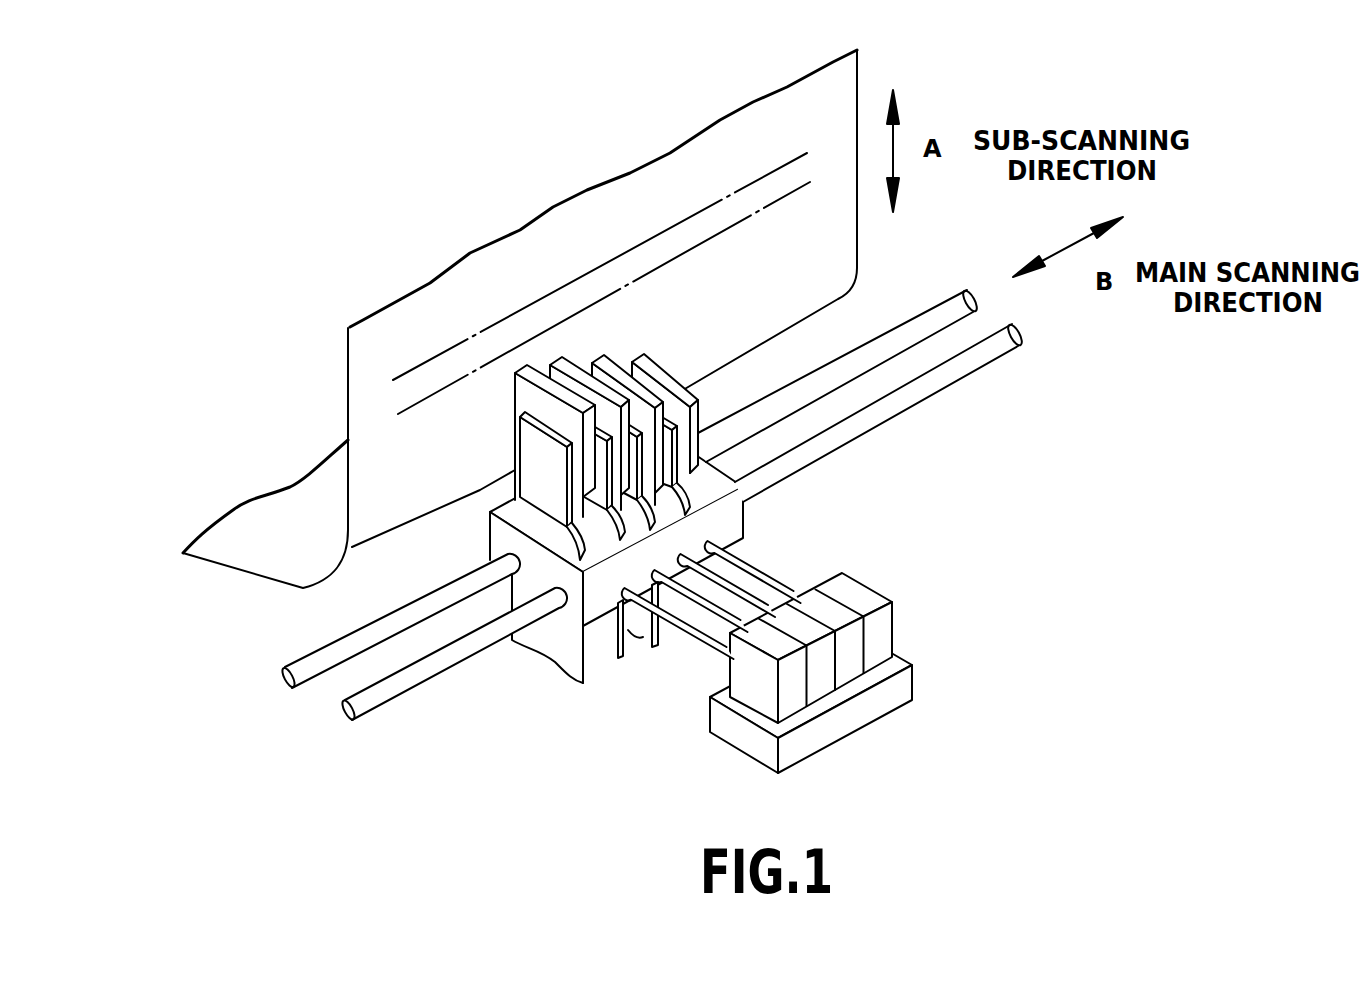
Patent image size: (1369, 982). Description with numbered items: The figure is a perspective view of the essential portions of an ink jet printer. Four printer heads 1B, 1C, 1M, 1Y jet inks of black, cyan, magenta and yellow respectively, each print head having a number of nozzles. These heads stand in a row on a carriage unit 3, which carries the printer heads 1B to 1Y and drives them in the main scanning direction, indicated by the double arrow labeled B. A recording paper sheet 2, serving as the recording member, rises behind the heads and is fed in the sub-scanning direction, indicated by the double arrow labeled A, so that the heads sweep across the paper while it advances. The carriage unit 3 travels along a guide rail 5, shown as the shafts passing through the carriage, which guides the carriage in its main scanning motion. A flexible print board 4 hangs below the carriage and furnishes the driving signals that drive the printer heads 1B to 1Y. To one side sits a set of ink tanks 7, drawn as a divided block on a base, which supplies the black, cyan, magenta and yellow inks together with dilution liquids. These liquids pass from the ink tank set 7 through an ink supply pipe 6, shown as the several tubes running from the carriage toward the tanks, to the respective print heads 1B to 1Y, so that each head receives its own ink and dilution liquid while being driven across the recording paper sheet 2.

The printer head 1B is at (523, 363).
The printer head 1C is at (560, 362).
The printer head 1M is at (597, 362).
The printer head 1Y is at (635, 363).
The recording paper sheet 2 is at (348, 361).
The carriage unit 3 is at (745, 518).
The flexible print board 4 is at (655, 642).
The guide rail 5 is at (312, 682).
The ink supply pipe 6 is at (778, 578).
The ink tanks 7 is at (893, 628).